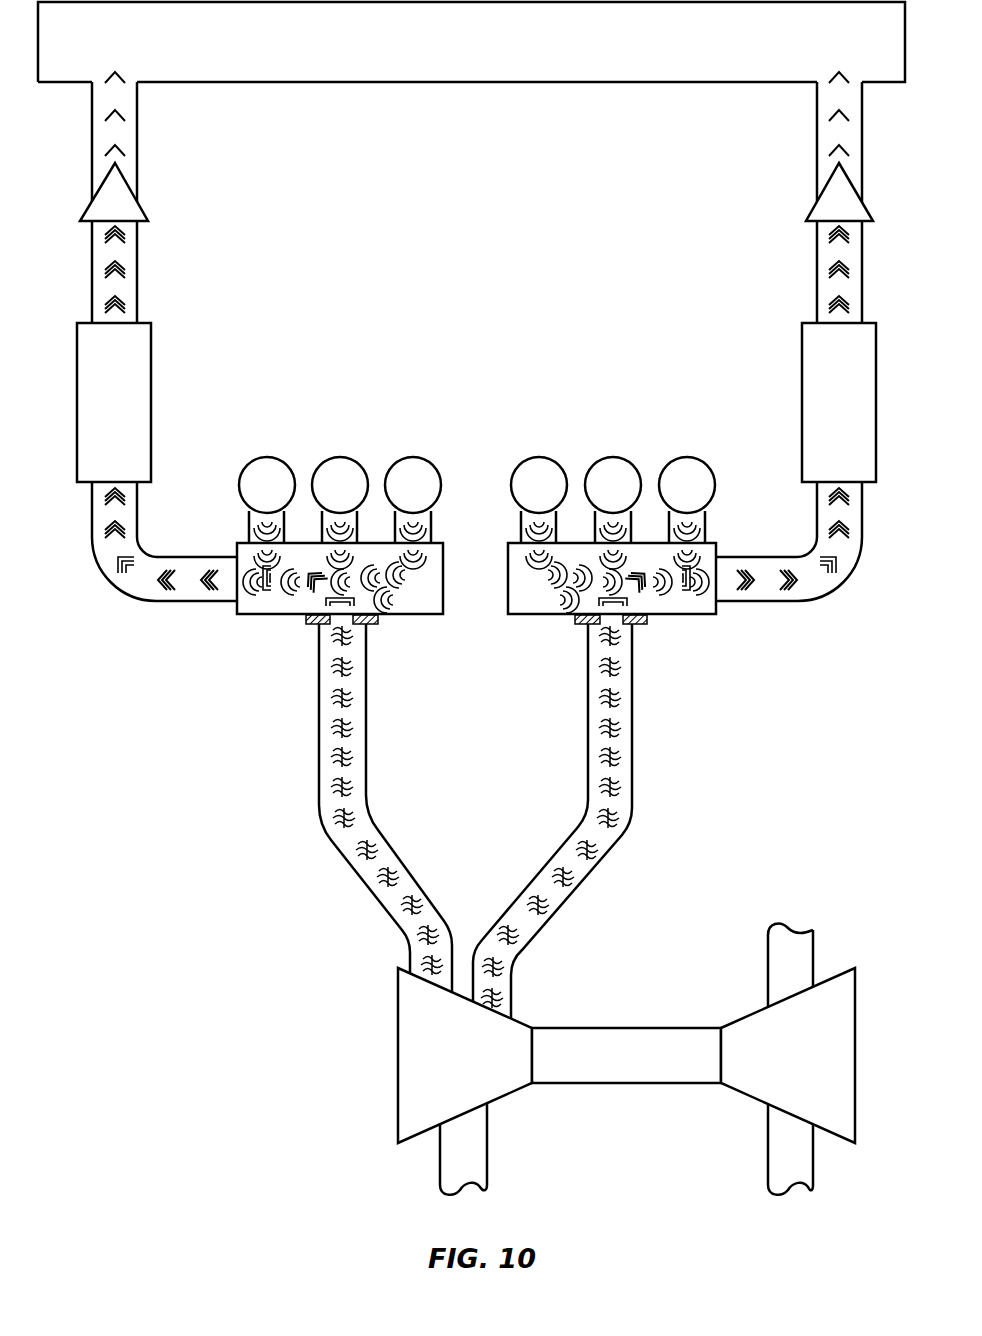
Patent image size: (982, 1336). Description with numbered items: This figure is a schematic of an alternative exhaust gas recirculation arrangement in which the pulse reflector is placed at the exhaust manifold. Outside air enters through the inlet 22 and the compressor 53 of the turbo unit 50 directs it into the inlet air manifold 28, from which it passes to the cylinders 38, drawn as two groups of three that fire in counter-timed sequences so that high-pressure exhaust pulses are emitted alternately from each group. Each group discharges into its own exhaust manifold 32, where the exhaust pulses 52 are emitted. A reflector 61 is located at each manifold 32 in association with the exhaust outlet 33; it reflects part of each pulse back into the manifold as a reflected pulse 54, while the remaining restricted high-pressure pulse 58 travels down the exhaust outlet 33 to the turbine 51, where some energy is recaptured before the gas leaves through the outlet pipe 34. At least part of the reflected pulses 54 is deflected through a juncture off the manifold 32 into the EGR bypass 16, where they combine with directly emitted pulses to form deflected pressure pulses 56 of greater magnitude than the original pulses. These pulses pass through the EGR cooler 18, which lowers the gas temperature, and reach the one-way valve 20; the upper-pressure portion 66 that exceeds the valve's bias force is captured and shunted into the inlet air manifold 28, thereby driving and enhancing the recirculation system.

The inlet air manifold 28 is at (454, 57).
The upper-pressure portion of the deflected pulse 66 is at (122, 78).
The one-way valve 20 is at (115, 200).
The deflected pressure pulse 56 is at (122, 267).
The EGR cooler 18 is at (102, 415).
The EGR bypass 16 is at (134, 602).
The cylinder 38 is at (279, 498).
The exhaust pulse 52 is at (257, 516).
The exhaust manifold 32 is at (270, 620).
The reflected pulse 54 is at (263, 575).
The reflector 61 is at (306, 628).
The exhaust outlet 33 is at (376, 632).
The restricted high-pressure pulse 58 is at (340, 823).
The turbo unit 50 is at (626, 1055).
The turbine 51 is at (455, 1067).
The compressor 53 is at (779, 1069).
The outlet pipe 34 is at (468, 1135).
The inlet 22 is at (784, 1135).